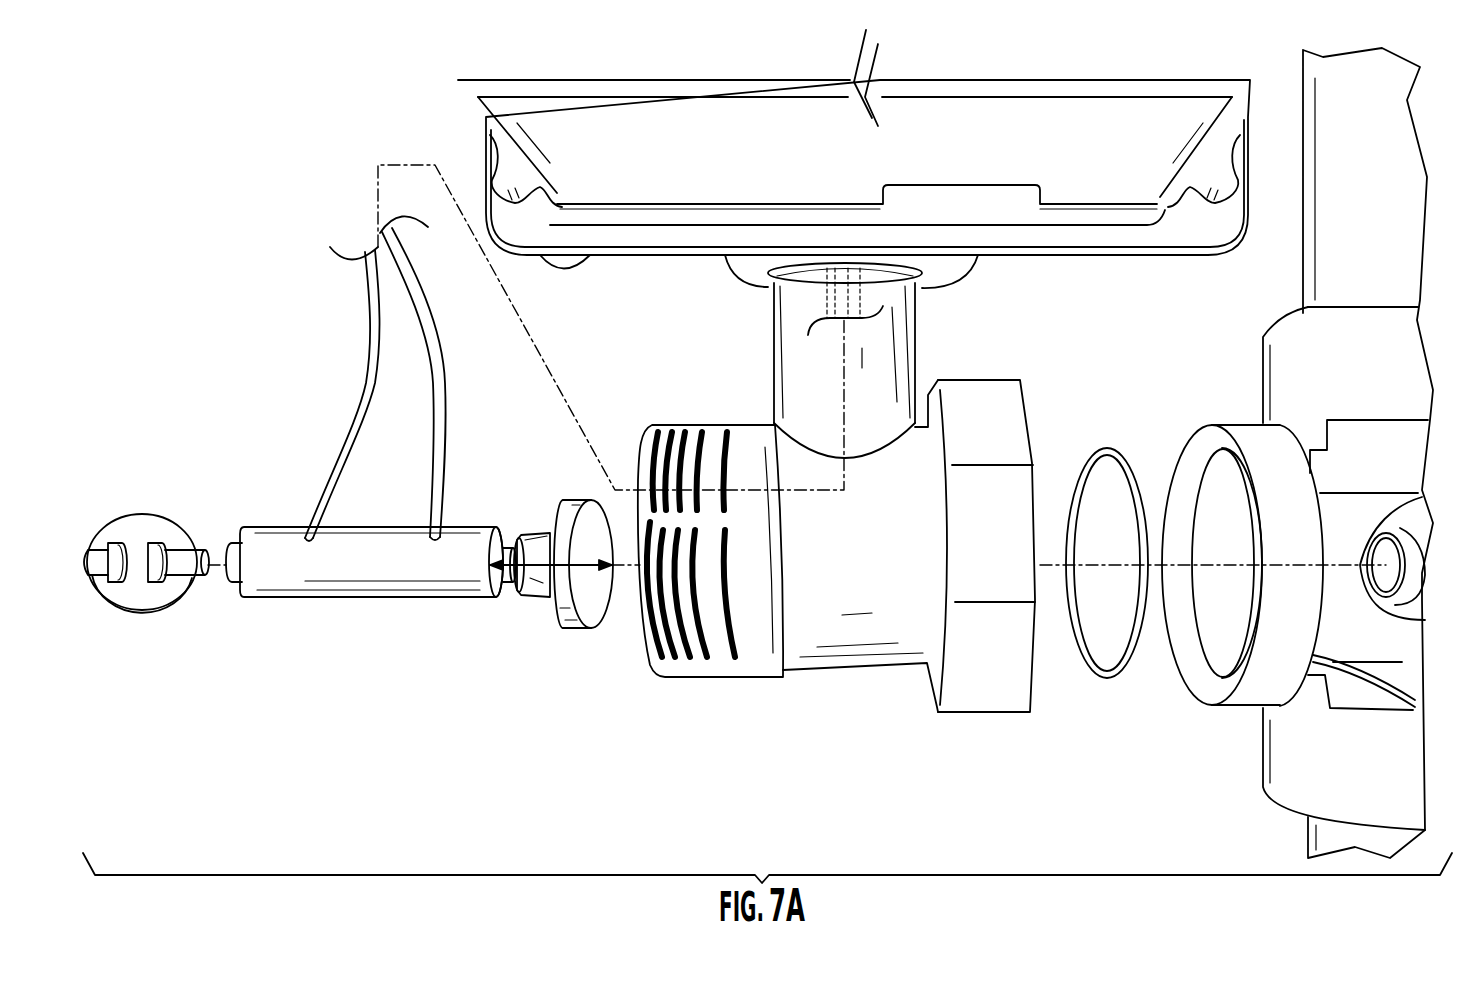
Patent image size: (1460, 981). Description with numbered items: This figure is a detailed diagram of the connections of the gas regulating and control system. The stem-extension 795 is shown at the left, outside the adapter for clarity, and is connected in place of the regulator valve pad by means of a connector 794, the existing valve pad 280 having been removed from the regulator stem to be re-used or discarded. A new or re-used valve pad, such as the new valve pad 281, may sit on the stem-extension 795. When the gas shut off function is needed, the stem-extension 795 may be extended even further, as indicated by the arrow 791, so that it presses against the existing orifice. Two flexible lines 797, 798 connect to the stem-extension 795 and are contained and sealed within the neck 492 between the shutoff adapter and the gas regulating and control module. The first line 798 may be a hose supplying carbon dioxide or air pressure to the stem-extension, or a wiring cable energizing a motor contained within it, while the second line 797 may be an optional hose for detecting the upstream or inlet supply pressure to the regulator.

The neck 492 is at (772, 343).
The connector 794 is at (148, 593).
The stem-extension 795 is at (382, 597).
The second flexible line 797 is at (377, 358).
The first flexible line 798 is at (438, 443).
The arrow 791 is at (523, 597).
The existing valve pad 280 is at (561, 597).
The new valve pad 281 is at (592, 598).